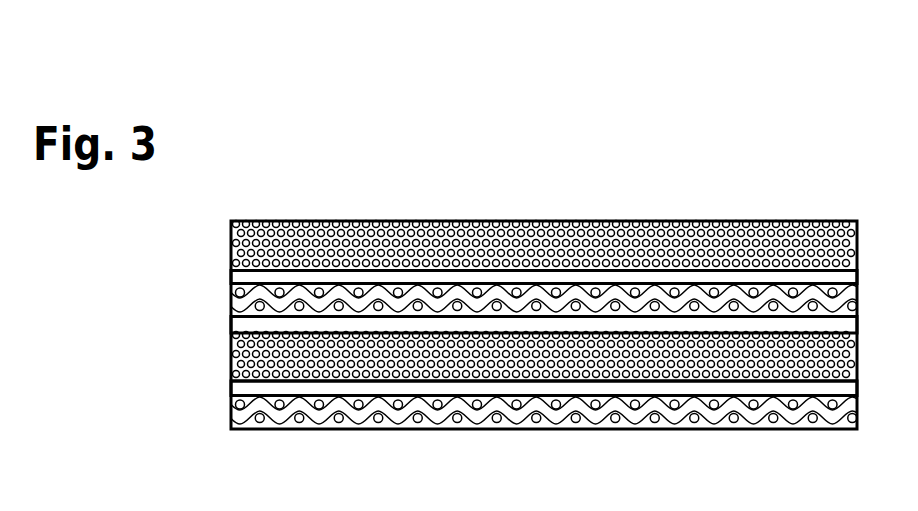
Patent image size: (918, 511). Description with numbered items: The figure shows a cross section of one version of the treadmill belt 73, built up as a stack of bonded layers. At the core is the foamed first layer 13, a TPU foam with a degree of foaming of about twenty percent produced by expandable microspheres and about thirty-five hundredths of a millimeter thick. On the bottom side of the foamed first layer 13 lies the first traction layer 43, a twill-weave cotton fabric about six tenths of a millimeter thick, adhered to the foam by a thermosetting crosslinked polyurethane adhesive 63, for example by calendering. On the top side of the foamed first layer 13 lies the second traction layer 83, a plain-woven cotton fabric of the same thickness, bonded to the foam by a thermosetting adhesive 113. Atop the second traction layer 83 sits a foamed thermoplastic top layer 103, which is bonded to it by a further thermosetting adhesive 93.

The laminated composite panel 73 is at (511, 221).
The foamed thermoplastic top layer 103 is at (242, 246).
The thermosetting adhesive 113 is at (242, 274).
The second traction layer 83 is at (242, 304).
The thermosetting adhesive 93 is at (242, 327).
The foamed first layer 13 is at (242, 358).
The thermosetting adhesive 63 is at (242, 390).
The first traction layer 43 is at (242, 418).